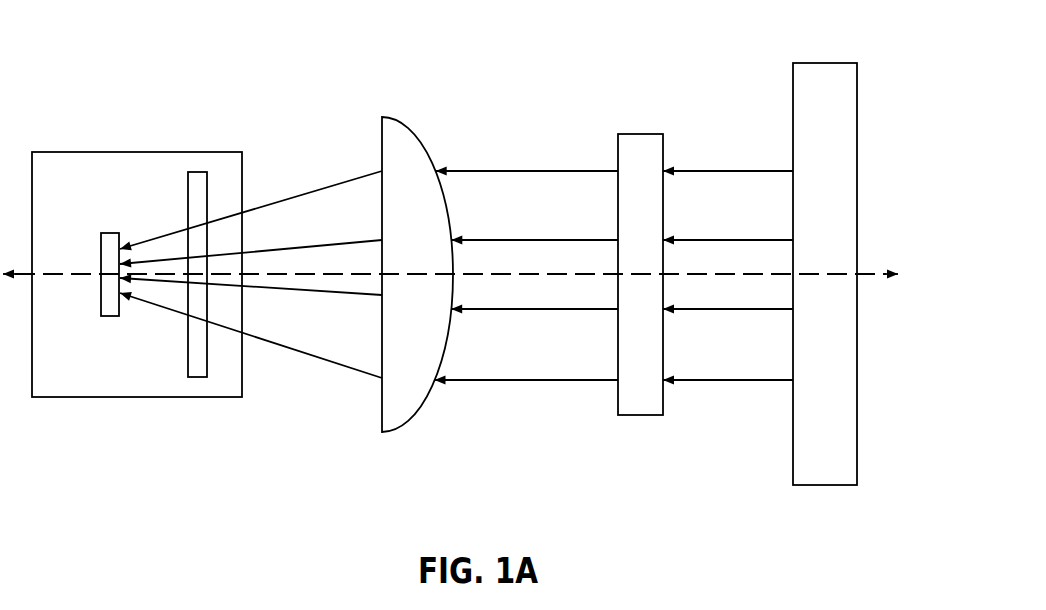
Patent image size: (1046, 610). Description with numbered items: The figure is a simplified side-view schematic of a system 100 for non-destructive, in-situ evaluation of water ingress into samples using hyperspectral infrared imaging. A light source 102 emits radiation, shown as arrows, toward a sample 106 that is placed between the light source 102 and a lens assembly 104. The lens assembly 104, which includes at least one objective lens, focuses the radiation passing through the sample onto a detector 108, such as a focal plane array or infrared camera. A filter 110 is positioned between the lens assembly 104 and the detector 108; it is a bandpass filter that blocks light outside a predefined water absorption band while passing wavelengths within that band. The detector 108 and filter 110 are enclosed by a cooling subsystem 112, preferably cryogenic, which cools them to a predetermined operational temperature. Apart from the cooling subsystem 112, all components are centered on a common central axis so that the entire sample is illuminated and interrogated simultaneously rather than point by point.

The system 100 is at (193, 72).
The light source 102 is at (827, 68).
The lens assembly 104 is at (390, 120).
The sample 106 is at (641, 137).
The detector 108 is at (108, 254).
The filter 110 is at (197, 209).
The cooling subsystem 112 is at (146, 152).